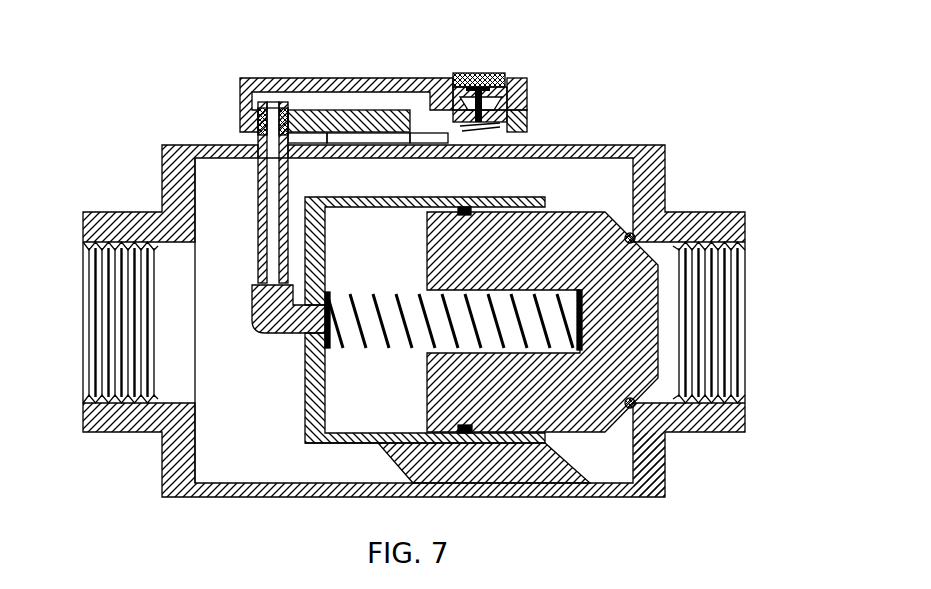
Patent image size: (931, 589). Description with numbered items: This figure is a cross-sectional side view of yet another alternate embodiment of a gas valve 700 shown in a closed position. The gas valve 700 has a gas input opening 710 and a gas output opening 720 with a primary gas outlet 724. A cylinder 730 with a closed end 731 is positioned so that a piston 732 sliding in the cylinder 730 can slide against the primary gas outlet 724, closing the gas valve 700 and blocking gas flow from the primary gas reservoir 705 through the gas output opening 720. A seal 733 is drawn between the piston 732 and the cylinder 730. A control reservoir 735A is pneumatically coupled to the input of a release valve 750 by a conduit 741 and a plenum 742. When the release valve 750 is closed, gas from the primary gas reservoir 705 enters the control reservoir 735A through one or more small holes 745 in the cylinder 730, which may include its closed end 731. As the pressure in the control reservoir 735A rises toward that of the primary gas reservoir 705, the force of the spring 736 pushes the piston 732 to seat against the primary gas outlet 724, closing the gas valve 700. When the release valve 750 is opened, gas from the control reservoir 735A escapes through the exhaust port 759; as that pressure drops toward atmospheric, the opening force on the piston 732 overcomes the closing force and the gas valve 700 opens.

The gas valve 700 is at (672, 118).
The primary gas reservoir 705 is at (250, 402).
The gas input opening 710 is at (70, 378).
The gas output opening 720 is at (748, 363).
The primary gas outlet 724 is at (646, 243).
The cylinder 730 is at (572, 486).
The closed end 731 is at (305, 358).
The piston 732 is at (568, 212).
The seal 733 is at (468, 433).
The control reservoir 735A is at (368, 392).
The spring 736 is at (657, 470).
The conduit 741 is at (263, 192).
The plenum 742 is at (273, 97).
The small holes 745 is at (330, 452).
The release valve 750 is at (510, 72).
The exhaust port 759 is at (538, 103).